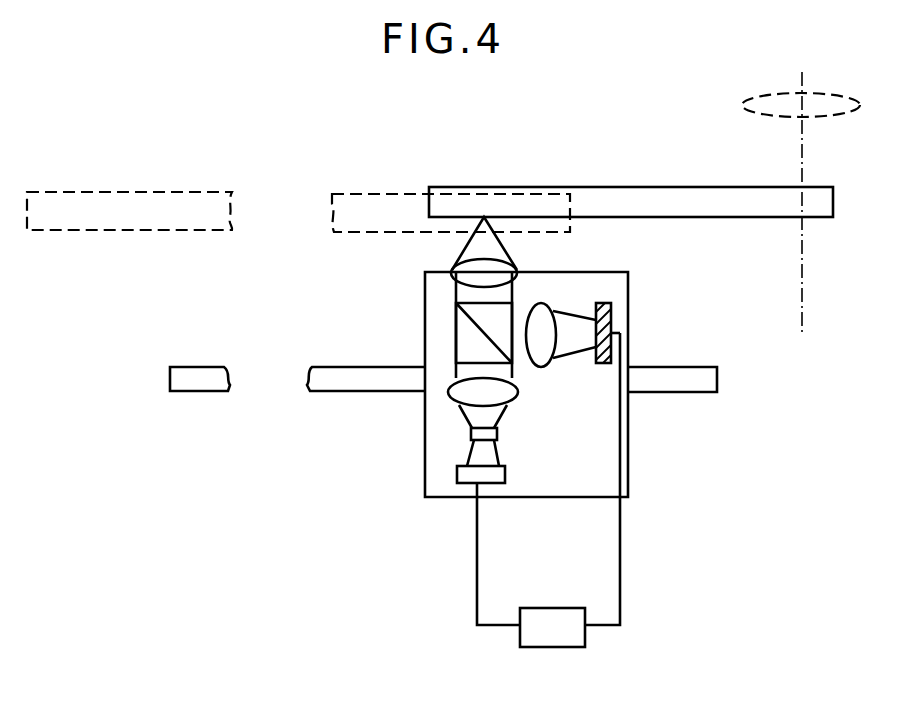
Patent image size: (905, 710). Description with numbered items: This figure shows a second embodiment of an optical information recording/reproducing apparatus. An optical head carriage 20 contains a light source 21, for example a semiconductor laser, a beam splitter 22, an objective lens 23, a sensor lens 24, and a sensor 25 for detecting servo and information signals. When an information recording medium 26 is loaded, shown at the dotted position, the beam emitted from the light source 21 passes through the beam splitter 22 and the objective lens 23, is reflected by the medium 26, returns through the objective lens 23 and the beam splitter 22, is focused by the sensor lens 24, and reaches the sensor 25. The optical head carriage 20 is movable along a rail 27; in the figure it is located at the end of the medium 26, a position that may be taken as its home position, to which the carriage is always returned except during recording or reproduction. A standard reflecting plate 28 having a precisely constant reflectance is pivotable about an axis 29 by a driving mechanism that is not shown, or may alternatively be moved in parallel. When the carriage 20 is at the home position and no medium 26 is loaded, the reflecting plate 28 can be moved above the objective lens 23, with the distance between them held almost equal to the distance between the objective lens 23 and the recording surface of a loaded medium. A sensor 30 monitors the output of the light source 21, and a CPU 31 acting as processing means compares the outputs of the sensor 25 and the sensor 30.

The optical head carriage 20 is at (605, 272).
The light source 21 is at (470, 433).
The beam splitter 22 is at (455, 331).
The objective lens 23 is at (452, 270).
The sensor lens 24 is at (543, 303).
The sensor 25 is at (612, 312).
The information recording medium 26 is at (380, 191).
The rail 27 is at (681, 367).
The standard reflecting plate 28 is at (662, 187).
The axis 29 is at (803, 92).
The sensor 30 is at (457, 473).
The CPU 31 is at (571, 648).